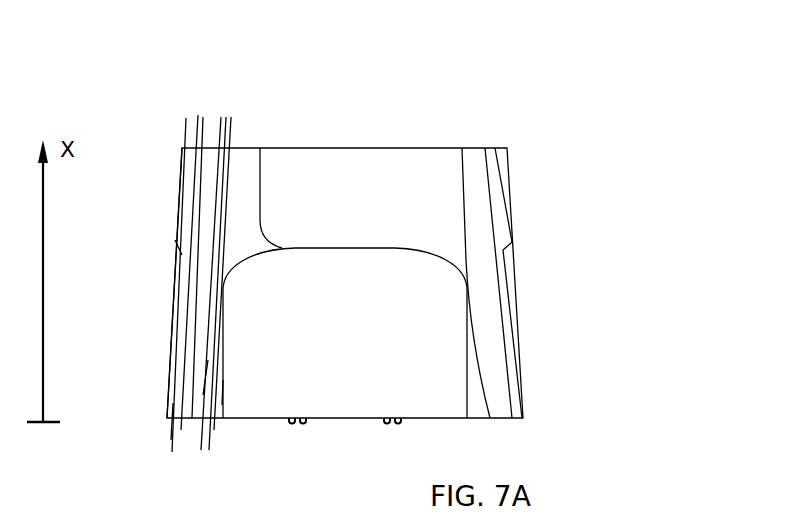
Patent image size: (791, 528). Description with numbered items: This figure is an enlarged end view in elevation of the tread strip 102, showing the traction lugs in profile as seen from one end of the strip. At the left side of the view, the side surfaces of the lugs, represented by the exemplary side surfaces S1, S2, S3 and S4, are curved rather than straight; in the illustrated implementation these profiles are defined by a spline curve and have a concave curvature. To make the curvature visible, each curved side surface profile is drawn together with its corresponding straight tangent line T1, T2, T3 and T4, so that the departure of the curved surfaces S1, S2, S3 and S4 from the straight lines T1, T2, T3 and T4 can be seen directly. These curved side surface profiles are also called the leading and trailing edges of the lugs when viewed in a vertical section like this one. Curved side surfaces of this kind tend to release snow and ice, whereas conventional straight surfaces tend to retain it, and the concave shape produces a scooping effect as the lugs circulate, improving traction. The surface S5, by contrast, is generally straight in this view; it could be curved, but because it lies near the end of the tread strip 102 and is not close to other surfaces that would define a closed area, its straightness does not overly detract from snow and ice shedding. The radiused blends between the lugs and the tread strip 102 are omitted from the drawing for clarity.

The tread strip 102 is at (556, 127).
The straight tangent line T1 is at (232, 133).
The straight tangent line T2 is at (227, 132).
The straight tangent line T3 is at (200, 130).
The straight tangent line T4 is at (186, 127).
The side surface S1 is at (203, 395).
The side surface S2 is at (205, 325).
The side surface S3 is at (173, 403).
The side surface S4 is at (182, 168).
The surface S5 is at (222, 405).